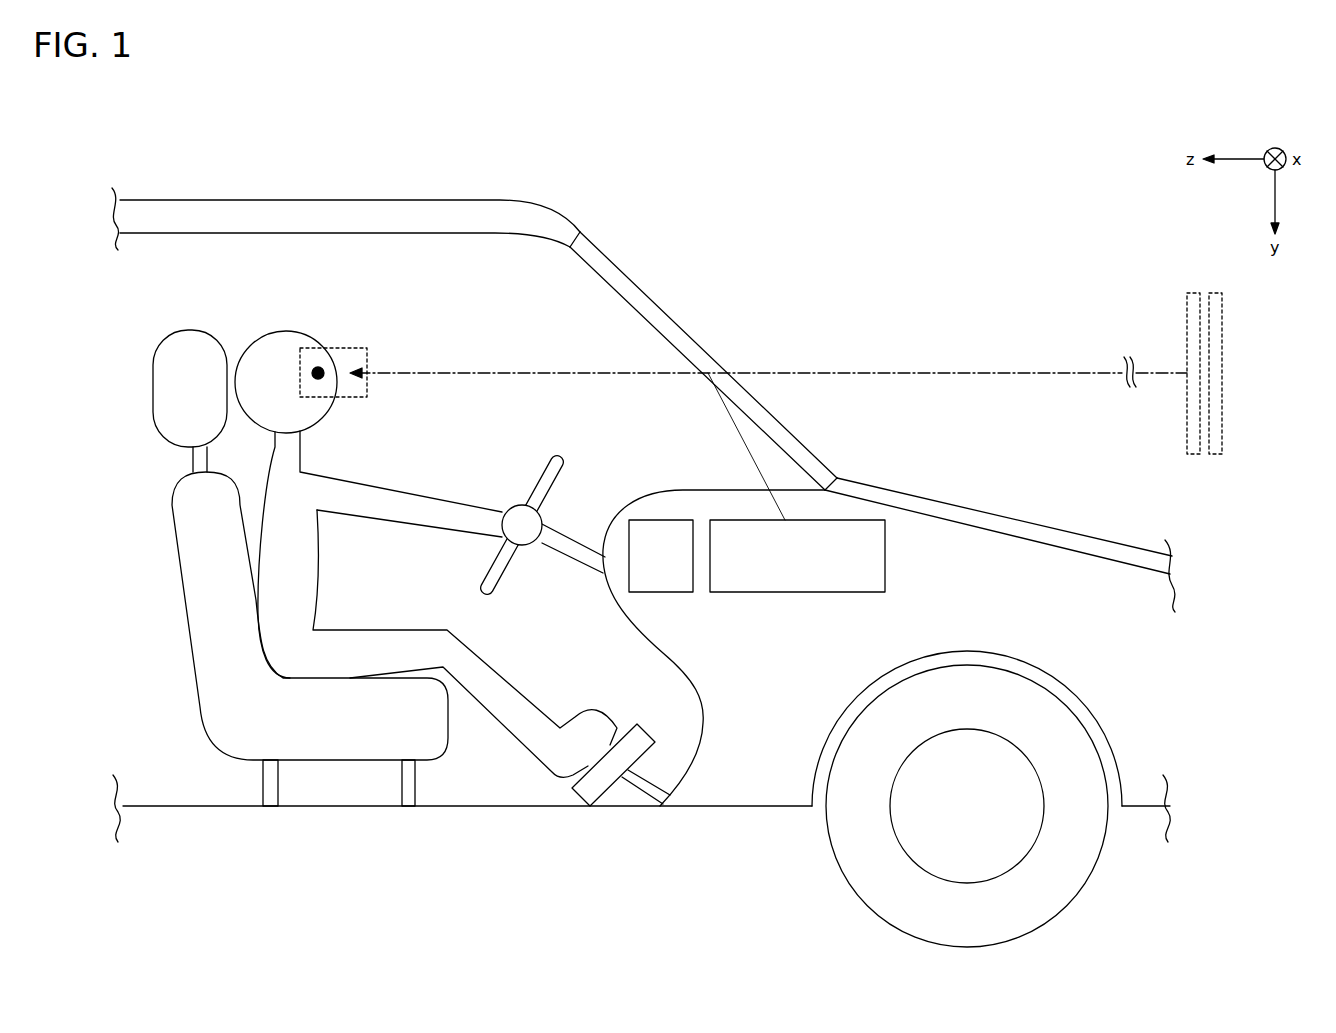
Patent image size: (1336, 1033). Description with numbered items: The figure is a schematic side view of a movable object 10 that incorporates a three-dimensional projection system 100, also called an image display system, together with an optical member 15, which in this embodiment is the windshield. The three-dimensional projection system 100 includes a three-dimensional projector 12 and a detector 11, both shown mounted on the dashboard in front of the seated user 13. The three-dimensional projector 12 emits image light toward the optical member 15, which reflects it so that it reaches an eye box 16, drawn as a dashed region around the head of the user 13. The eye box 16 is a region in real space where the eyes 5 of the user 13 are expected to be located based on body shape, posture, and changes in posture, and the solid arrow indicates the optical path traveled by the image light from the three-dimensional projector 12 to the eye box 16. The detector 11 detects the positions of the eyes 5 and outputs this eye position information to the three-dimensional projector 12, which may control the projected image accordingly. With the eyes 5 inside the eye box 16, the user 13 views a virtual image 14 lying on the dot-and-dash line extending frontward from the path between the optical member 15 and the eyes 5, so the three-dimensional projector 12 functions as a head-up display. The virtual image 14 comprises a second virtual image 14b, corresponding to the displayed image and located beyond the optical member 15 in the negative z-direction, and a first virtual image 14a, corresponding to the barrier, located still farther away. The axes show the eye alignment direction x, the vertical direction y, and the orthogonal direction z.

The movable object 10 is at (217, 183).
The optical member 15 is at (605, 254).
The user 13 is at (290, 332).
The eye box 16 is at (357, 348).
The eyes 5 is at (318, 380).
The detector 11 is at (660, 592).
The 3D projector 12 is at (697, 648).
The 3D projection system 100 is at (757, 532).
The virtual image 14 is at (1212, 421).
The first virtual image 14a is at (1241, 401).
The second virtual image 14b is at (1193, 454).